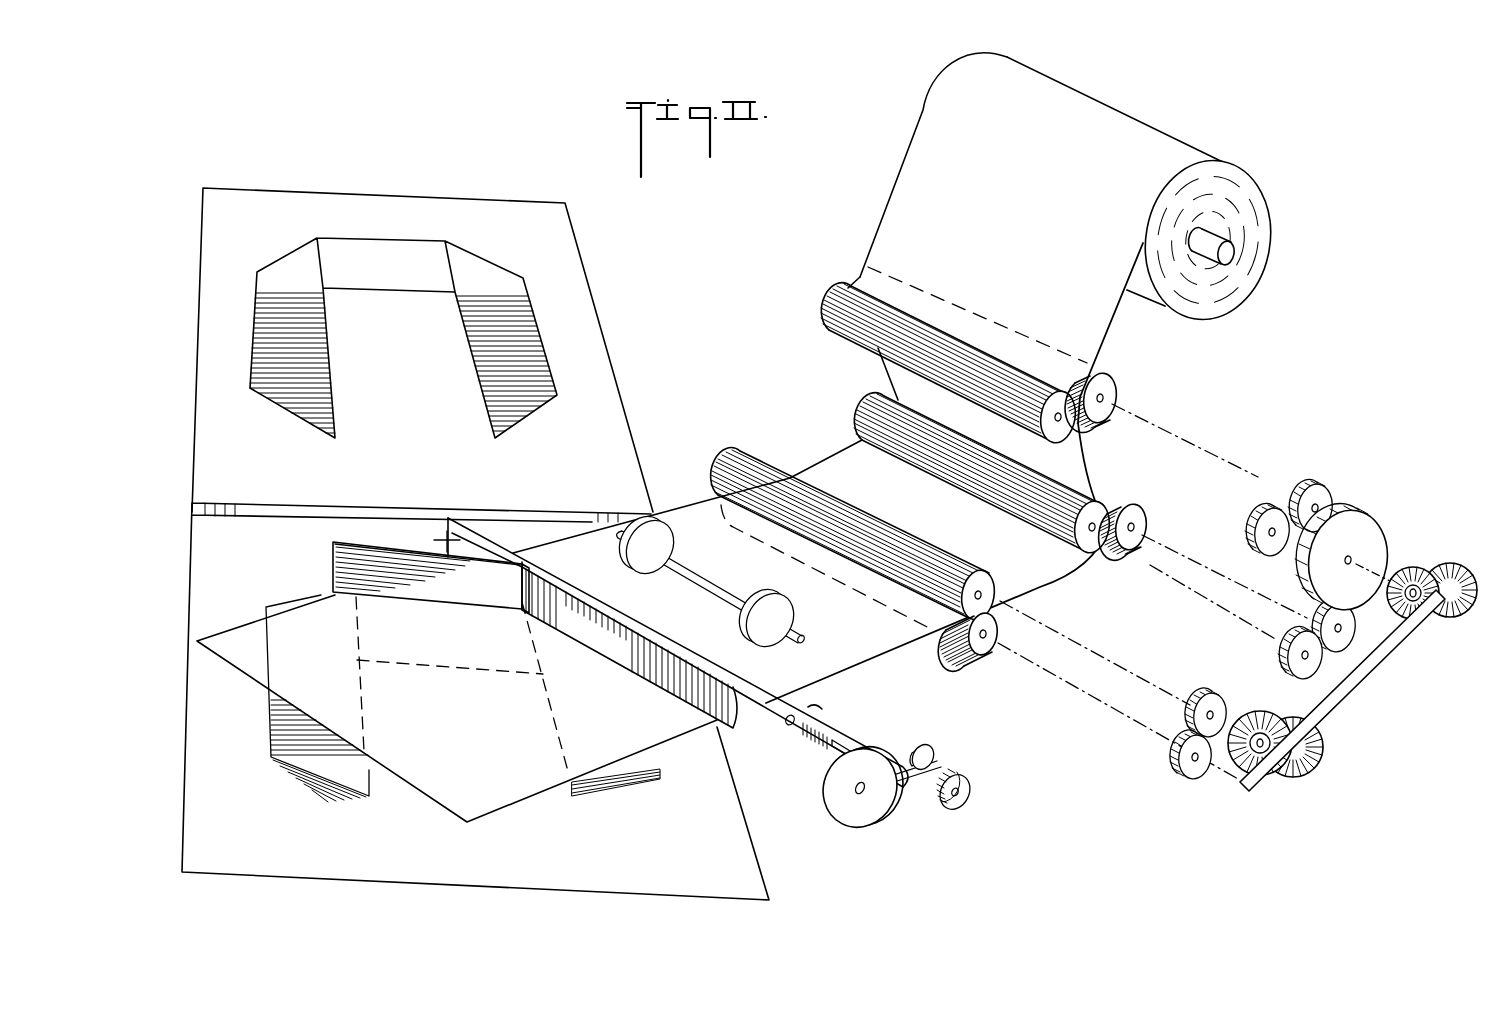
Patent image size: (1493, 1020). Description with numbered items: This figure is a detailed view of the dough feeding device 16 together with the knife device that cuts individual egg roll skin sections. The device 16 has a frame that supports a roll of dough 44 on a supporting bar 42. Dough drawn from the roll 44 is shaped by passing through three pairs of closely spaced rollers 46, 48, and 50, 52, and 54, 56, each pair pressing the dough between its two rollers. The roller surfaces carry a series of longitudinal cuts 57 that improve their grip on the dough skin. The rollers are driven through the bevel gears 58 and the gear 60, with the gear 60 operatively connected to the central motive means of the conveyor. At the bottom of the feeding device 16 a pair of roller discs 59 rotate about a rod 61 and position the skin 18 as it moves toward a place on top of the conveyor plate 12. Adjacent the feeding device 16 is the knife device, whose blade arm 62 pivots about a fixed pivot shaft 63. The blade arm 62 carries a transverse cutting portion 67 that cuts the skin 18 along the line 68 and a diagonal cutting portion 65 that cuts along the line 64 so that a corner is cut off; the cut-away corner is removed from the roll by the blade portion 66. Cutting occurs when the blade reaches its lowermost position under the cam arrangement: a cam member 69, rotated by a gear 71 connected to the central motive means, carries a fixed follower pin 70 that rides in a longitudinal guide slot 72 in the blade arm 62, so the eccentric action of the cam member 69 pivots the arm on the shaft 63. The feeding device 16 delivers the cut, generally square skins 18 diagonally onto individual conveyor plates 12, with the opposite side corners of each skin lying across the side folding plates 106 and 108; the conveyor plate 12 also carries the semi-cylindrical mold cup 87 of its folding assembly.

The conveyor plate 12 is at (495, 200).
The dough feeding device 16 is at (1276, 430).
The egg roll skin 18 is at (452, 791).
The supporting bar 42 is at (1232, 255).
The roll of dough 44 is at (1180, 148).
The roller 46 is at (730, 452).
The roller 48 is at (981, 655).
The roller 50 is at (866, 403).
The roller 52 is at (1150, 516).
The roller 54 is at (828, 303).
The roller 56 is at (1112, 389).
The longitudinal cuts 57 is at (870, 446).
The bevel gears 58 is at (1414, 566).
The roller discs 59 is at (656, 522).
The gear 60 is at (1377, 530).
The rod 61 is at (806, 637).
The blade arm 62 is at (803, 738).
The pivot shaft 63 is at (822, 705).
The cutting line 64 is at (369, 594).
The diagonal cutting portion 65 is at (333, 544).
The blade portion 66 is at (432, 539).
The transverse cutting portion 67 is at (670, 650).
The cutting line 68 is at (647, 697).
The cam member 69 is at (895, 832).
The follower pin 70 is at (851, 759).
The gear 71 is at (940, 757).
The guide slot 72 is at (878, 756).
The mold cup 87 is at (380, 248).
The side folding plate 106 is at (505, 278).
The side folding plate 108 is at (265, 273).